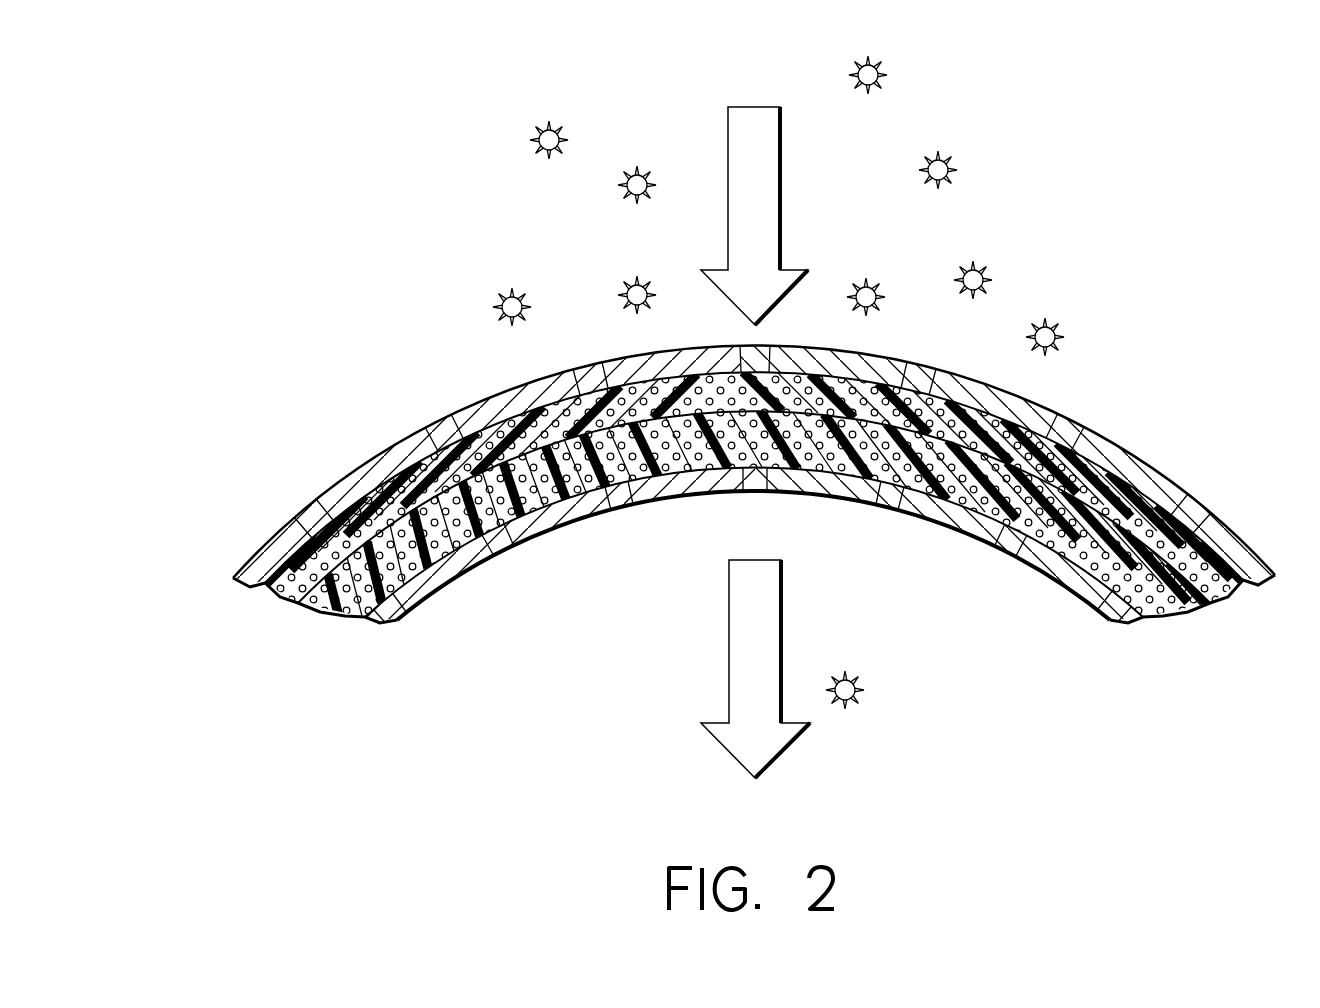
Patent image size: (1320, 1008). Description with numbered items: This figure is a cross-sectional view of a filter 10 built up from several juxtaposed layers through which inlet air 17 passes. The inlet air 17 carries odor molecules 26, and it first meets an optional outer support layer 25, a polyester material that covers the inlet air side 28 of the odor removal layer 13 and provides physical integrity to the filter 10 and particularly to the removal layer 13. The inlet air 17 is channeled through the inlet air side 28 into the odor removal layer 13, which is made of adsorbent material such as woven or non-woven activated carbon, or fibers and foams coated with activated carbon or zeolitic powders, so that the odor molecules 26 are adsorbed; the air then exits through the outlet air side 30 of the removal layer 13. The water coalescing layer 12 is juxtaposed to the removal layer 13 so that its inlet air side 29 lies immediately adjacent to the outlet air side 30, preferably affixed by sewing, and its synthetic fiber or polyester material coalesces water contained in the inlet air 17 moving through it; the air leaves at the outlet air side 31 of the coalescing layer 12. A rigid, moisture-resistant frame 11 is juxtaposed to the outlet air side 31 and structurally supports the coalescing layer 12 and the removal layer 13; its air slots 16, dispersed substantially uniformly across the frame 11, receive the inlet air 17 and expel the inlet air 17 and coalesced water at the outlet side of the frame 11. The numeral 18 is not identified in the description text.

The filter 10 is at (446, 362).
The frame 11 is at (478, 565).
The water coalescing layer 12 is at (1180, 613).
The odor removal layer 13 is at (1127, 474).
The air slots 16 is at (667, 500).
The inlet air 17 is at (781, 148).
The transmitted radiation arrow 18 is at (782, 608).
The outer support layer 25 is at (380, 462).
The odor molecules 26 is at (955, 166).
The inlet air side 28 is at (318, 498).
The inlet air side 29 is at (268, 561).
The outlet air side 30 is at (1102, 612).
The outlet air side 31 is at (1040, 566).